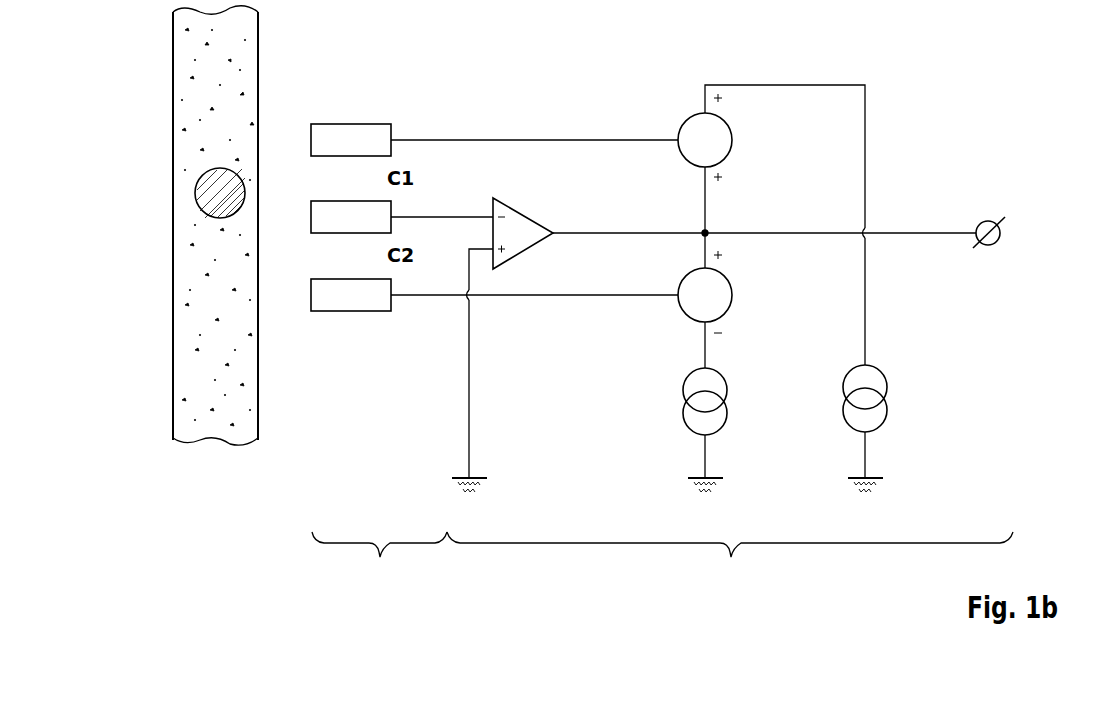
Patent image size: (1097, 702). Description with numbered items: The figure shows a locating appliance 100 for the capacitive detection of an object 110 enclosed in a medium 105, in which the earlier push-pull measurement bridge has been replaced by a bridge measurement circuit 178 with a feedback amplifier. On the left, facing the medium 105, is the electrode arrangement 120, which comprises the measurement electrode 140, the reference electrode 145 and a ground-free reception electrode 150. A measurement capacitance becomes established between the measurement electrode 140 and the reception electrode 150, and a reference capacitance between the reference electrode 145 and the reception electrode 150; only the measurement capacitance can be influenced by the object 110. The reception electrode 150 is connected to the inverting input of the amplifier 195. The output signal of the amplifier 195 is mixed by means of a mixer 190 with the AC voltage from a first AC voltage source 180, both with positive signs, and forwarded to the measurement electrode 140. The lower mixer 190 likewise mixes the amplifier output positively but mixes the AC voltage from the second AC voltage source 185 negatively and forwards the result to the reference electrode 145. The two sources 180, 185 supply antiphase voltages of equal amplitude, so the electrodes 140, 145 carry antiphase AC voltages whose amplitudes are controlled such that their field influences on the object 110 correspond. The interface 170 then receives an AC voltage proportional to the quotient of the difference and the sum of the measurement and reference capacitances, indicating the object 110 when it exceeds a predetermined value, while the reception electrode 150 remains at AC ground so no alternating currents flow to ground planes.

The locating appliance 100 is at (916, 62).
The medium 105 is at (183, 141).
The object 110 is at (197, 200).
The arrangement 120 is at (379, 558).
The measurement electrode 140 is at (351, 124).
The reference electrode 145 is at (352, 311).
The reception electrode 150 is at (318, 201).
The interface 170 is at (988, 221).
The bridge measurement circuit 178 is at (730, 558).
The first AC voltage source 180 is at (890, 402).
The second AC voltage source 185 is at (680, 402).
The mixer 190 is at (738, 140).
The amplifier 195 is at (532, 219).